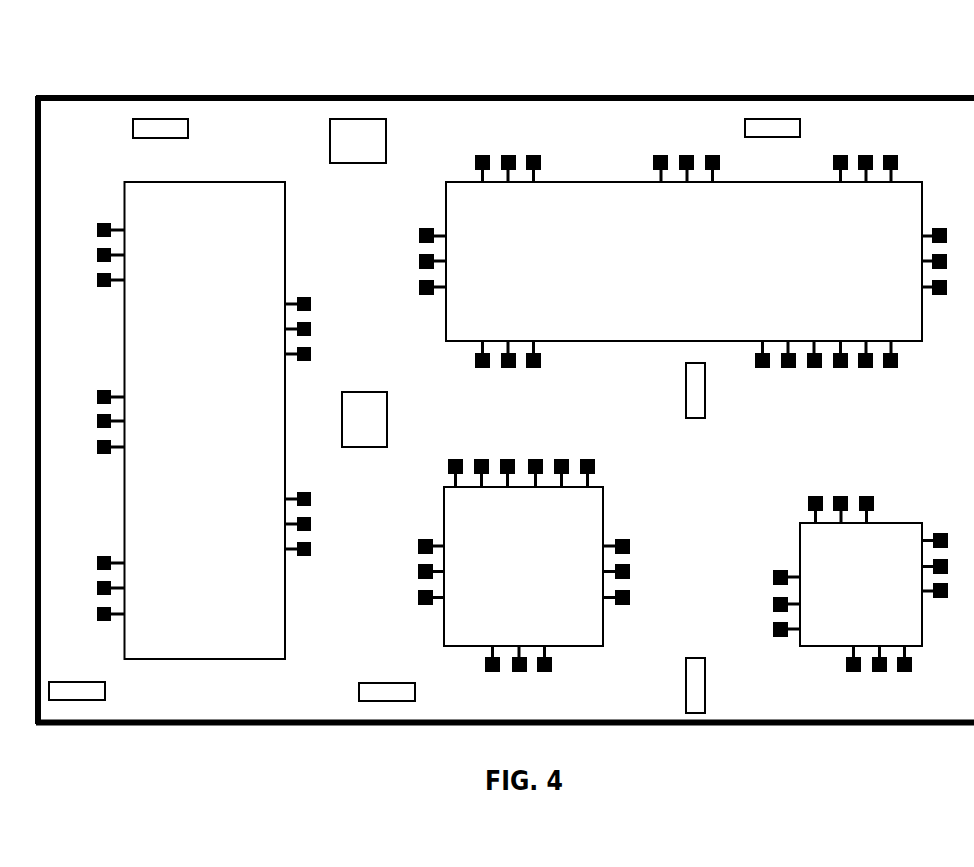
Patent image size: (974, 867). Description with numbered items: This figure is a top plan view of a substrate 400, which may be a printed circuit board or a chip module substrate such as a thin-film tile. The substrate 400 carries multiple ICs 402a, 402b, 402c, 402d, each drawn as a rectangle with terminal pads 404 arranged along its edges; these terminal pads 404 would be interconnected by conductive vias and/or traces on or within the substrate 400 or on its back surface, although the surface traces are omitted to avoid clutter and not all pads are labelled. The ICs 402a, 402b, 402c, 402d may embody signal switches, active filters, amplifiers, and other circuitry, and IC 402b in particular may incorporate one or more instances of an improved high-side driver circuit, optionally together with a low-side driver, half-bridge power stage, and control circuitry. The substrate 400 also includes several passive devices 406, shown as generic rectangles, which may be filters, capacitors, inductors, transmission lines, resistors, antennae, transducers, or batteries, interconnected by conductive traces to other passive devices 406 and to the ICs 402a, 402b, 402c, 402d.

The substrate 400 is at (558, 97).
The IC 402a is at (125, 182).
The IC 402b is at (626, 182).
The IC 402c is at (444, 518).
The IC 402d is at (800, 550).
The terminal pads 404 is at (419, 235).
The passive devices 406 is at (188, 128).